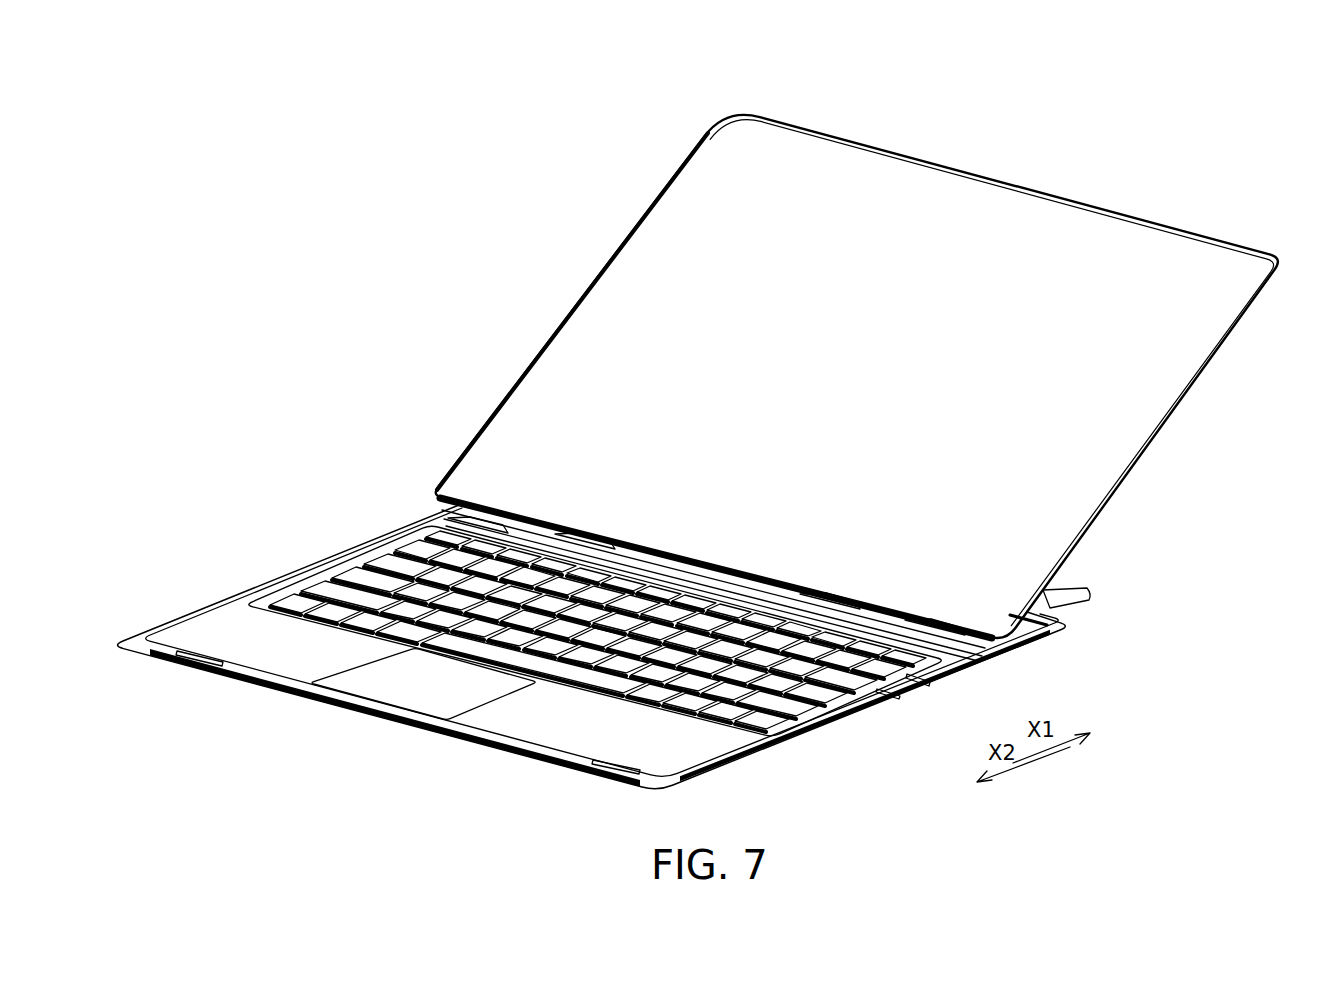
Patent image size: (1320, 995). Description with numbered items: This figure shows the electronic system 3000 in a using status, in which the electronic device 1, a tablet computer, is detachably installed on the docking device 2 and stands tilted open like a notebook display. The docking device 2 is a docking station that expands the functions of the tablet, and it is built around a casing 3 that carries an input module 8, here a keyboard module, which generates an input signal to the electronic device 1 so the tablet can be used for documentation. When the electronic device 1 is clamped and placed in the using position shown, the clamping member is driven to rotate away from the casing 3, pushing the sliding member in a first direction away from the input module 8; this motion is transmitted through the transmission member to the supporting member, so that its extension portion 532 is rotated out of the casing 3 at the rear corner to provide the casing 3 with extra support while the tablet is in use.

The electronic system 3000 is at (698, 451).
The electronic device 1 is at (517, 305).
The docking device 2 is at (656, 665).
The casing 3 is at (708, 747).
The input module 8 is at (833, 692).
The extension portion 532 is at (1062, 604).